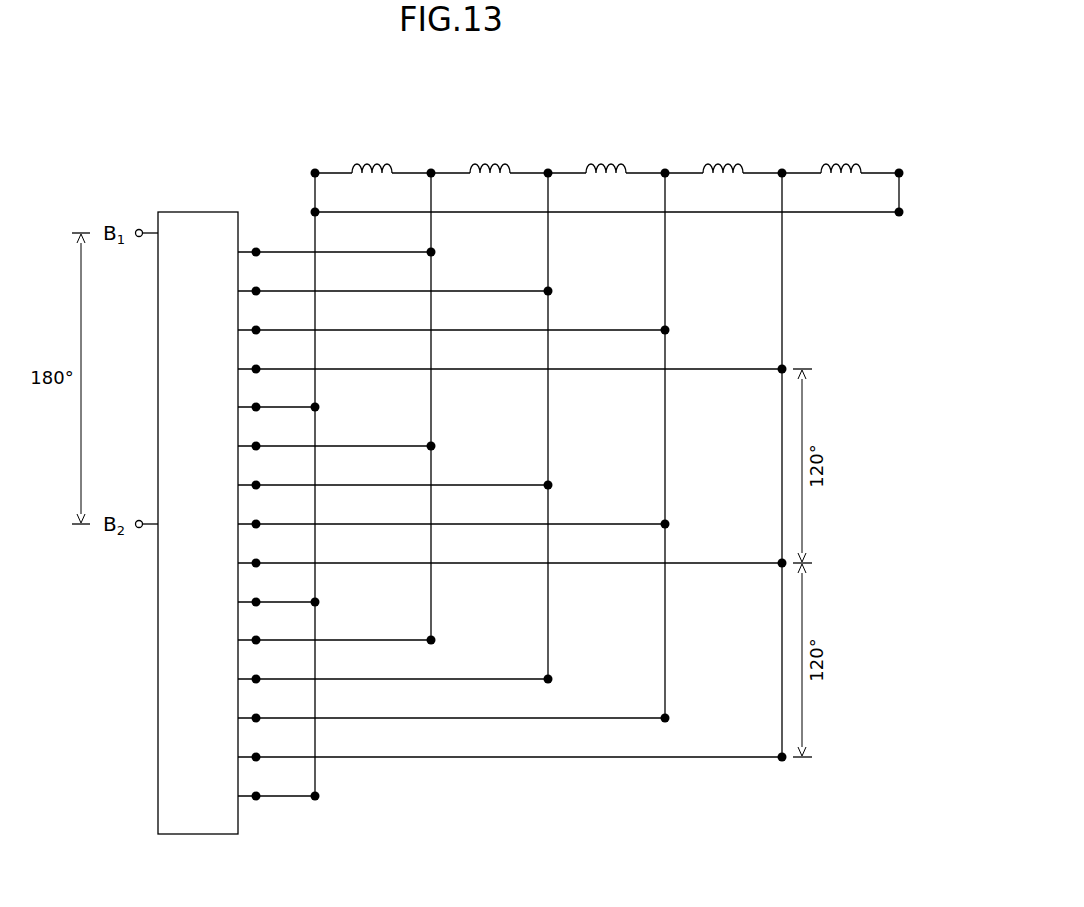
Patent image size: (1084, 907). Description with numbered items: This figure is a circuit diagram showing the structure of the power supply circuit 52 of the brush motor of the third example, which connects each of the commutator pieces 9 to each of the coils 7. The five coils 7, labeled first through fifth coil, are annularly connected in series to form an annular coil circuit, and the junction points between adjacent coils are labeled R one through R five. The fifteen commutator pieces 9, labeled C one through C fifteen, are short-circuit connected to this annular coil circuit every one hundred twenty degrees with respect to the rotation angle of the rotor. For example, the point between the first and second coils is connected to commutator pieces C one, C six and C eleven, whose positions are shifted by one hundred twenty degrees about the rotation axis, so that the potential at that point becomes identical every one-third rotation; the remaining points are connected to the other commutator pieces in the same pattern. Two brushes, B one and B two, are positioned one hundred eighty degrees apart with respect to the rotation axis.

The power supply circuit 52 is at (229, 176).
The coil 7 is at (901, 150).
The commutator piece 9 is at (277, 813).